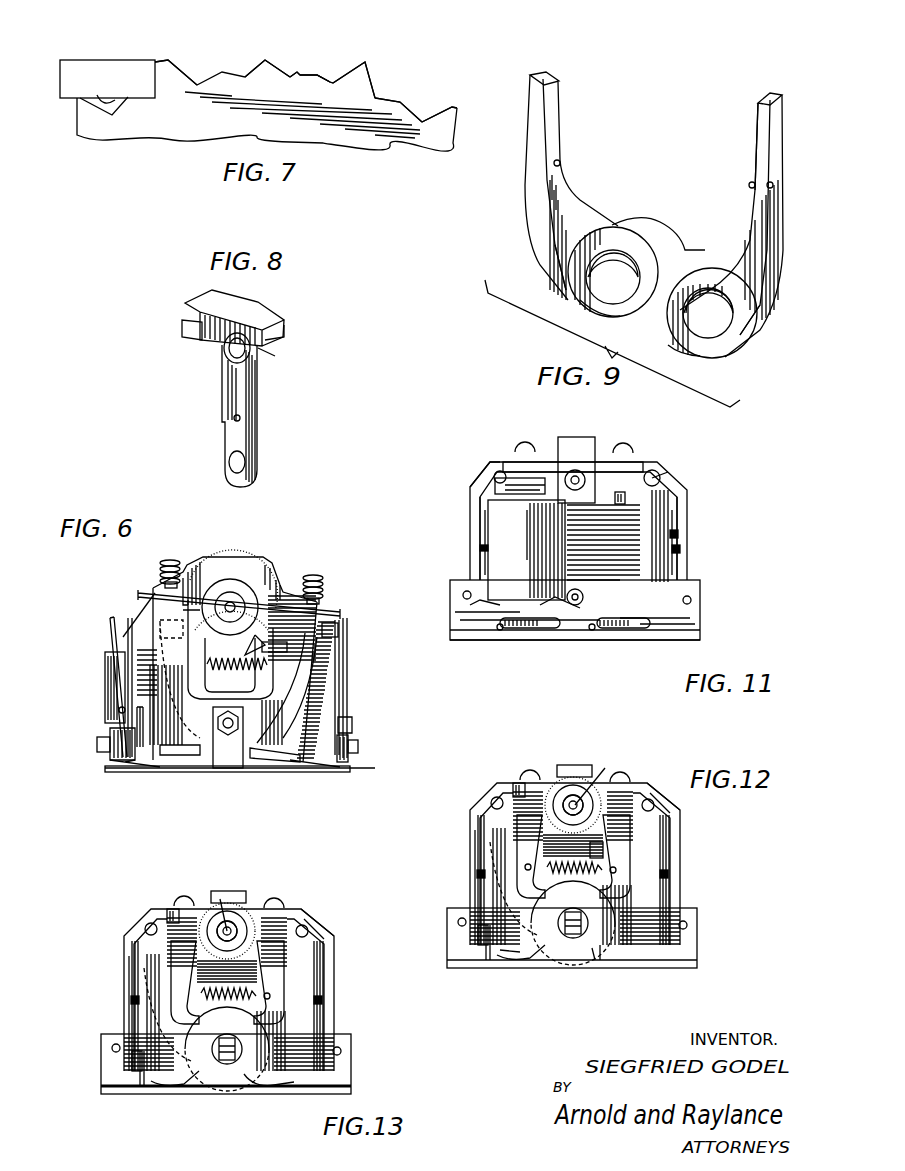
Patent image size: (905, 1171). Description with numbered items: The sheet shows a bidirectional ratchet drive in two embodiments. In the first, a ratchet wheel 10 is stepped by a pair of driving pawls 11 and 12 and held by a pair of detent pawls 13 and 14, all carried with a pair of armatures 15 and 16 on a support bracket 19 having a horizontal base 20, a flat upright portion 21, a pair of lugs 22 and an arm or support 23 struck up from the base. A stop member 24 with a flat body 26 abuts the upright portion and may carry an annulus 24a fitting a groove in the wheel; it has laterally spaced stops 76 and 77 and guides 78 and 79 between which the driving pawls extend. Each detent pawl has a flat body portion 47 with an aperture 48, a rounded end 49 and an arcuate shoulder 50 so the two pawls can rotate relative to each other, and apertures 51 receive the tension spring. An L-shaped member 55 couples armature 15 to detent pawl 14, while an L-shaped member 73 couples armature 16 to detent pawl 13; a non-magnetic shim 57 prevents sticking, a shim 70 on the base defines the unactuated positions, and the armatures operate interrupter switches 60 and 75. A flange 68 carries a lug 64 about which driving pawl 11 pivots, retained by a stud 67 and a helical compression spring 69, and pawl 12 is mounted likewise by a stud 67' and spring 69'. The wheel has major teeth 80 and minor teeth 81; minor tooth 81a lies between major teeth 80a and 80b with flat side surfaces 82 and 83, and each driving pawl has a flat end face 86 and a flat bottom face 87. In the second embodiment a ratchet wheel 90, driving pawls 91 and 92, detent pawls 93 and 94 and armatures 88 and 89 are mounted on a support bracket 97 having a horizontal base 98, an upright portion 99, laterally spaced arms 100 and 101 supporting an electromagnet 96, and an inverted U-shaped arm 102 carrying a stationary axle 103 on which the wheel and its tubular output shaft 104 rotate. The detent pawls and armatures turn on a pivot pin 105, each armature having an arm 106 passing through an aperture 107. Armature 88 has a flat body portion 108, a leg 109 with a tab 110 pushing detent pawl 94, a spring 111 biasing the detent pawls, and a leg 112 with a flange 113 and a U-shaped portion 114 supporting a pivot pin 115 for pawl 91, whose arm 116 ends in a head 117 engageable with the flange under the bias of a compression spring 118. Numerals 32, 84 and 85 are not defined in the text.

In FIG. 7, the ratchet wheel 10 is at (188, 146).
In FIG. 6, the ratchet wheel 10 is at (245, 572).
In FIG. 7, the driving pawl 11 is at (108, 60).
In FIG. 6, the driving pawl 11 is at (205, 570).
In FIG. 6, the driving pawl 12 is at (280, 590).
In FIG. 9, the detent pawl 13 is at (565, 128).
In FIG. 6, the detent pawl 13 is at (205, 678).
In FIG. 9, the detent pawl 14 is at (752, 122).
In FIG. 6, the detent pawl 14 is at (305, 672).
In FIG. 6, the armature 15 is at (165, 755).
In FIG. 6, the armature 16 is at (290, 760).
In FIG. 6, the support bracket 19 is at (350, 718).
In FIG. 6, the horizontal base 20 is at (245, 768).
In FIG. 6, the flat upright portion 21 is at (341, 686).
In FIG. 6, the lugs 22 is at (128, 760).
In FIG. 6, the arm or support 23 is at (226, 770).
In FIG. 8, the stop member 24 is at (208, 396).
In FIG. 6, the stop member 24 is at (270, 553).
In FIG. 8, the annulus 24a is at (225, 346).
In FIG. 8, the flat body 26 is at (247, 395).
In FIG. 6, the shaft 32 is at (230, 600).
In FIG. 9, the flat body portion 47 is at (795, 172).
In FIG. 9, the aperture 48 is at (636, 278).
In FIG. 9, the rounded end 49 is at (660, 346).
In FIG. 9, the arcuate shoulder 50 is at (625, 230).
In FIG. 9, the apertures 51 is at (560, 163).
In FIG. 6, the L-shaped member 55 is at (290, 648).
In FIG. 6, the non-magnetic shim 57 is at (242, 672).
In FIG. 6, the interrupter switch 60 is at (356, 646).
In FIG. 6, the lug 64 is at (142, 590).
In FIG. 6, the stud 67 is at (170, 553).
In FIG. 6, the stud 67' is at (320, 575).
In FIG. 6, the flange 68 is at (140, 598).
In FIG. 6, the helical compression spring 69 is at (155, 564).
In FIG. 6, the spring 69' is at (332, 590).
In FIG. 6, the shim 70 is at (193, 760).
In FIG. 6, the L-shaped member 73 is at (112, 642).
In FIG. 6, the interrupter switch 75 is at (112, 656).
In FIG. 8, the stop 76 is at (182, 312).
In FIG. 8, the stop 77 is at (272, 342).
In FIG. 8, the guide 78 is at (182, 328).
In FIG. 8, the guide 79 is at (270, 350).
In FIG. 7, the major teeth 80 is at (452, 106).
In FIG. 7, the major tooth 80a is at (264, 60).
In FIG. 7, the major tooth 80b is at (366, 62).
In FIG. 7, the minor teeth 81 is at (400, 102).
In FIG. 7, the minor tooth 81a is at (316, 74).
In FIG. 7, the flat side surface 82 is at (327, 91).
In FIG. 7, the flat side surface 83 is at (290, 89).
In FIG. 9, the arm tip 84 is at (551, 75).
In FIG. 9, the arm face 85 is at (757, 138).
In FIG. 7, the flat end face 86 is at (170, 60).
In FIG. 7, the flat bottom face 87 is at (107, 87).
In FIG. 11, the armature 88 is at (678, 526).
In FIG. 12, the armature 88 is at (485, 947).
In FIG. 13, the armature 88 is at (198, 1006).
In FIG. 11, the armature 89 is at (485, 516).
In FIG. 12, the armature 89 is at (648, 962).
In FIG. 13, the armature 89 is at (313, 1022).
In FIG. 12, the ratchet wheel 90 is at (577, 790).
In FIG. 13, the ratchet wheel 90 is at (243, 915).
In FIG. 11, the driving pawl 91 is at (695, 501).
In FIG. 12, the driving pawl 91 is at (522, 783).
In FIG. 13, the driving pawl 91 is at (229, 967).
In FIG. 11, the driving pawl 92 is at (478, 482).
In FIG. 12, the driving pawl 92 is at (640, 790).
In FIG. 13, the driving pawl 92 is at (306, 907).
In FIG. 12, the detent pawl 93 is at (525, 842).
In FIG. 13, the detent pawl 93 is at (190, 971).
In FIG. 12, the detent pawl 94 is at (615, 840).
In FIG. 13, the detent pawl 94 is at (284, 960).
In FIG. 11, the electromagnet 96 is at (526, 550).
In FIG. 11, the support bracket 97 is at (708, 616).
In FIG. 12, the support bracket 97 is at (706, 939).
In FIG. 13, the support bracket 97 is at (246, 1061).
In FIG. 11, the horizontal base 98 is at (700, 639).
In FIG. 11, the upright portion 99 is at (692, 592).
In FIG. 12, the upright portion 99 is at (690, 955).
In FIG. 13, the upright portion 99 is at (250, 1062).
In FIG. 11, the arm 100 is at (648, 472).
In FIG. 11, the arm 101 is at (525, 480).
In FIG. 11, the inverted U-shaped arm 102 is at (590, 452).
In FIG. 12, the inverted U-shaped arm 102 is at (562, 765).
In FIG. 11, the stationary shaft or axle 103 is at (572, 472).
In FIG. 12, the stationary shaft or axle 103 is at (585, 797).
In FIG. 13, the stationary shaft or axle 103 is at (239, 895).
In FIG. 12, the tubular output shaft 104 is at (600, 770).
In FIG. 13, the tubular output shaft 104 is at (211, 888).
In FIG. 11, the pivot pin 105 is at (575, 606).
In FIG. 12, the pivot pin 105 is at (572, 935).
In FIG. 13, the pivot pin 105 is at (227, 1064).
In FIG. 11, the arm 106 is at (532, 630).
In FIG. 11, the aperture 107 is at (499, 632).
In FIG. 12, the aperture 107 is at (592, 958).
In FIG. 13, the aperture 107 is at (222, 1099).
In FIG. 12, the flat body portion 108 is at (520, 955).
In FIG. 12, the leg 109 is at (605, 872).
In FIG. 13, the leg 109 is at (287, 1001).
In FIG. 12, the tab 110 is at (605, 853).
In FIG. 13, the spring 111 is at (179, 1014).
In FIG. 12, the leg 112 is at (495, 828).
In FIG. 13, the leg 112 is at (118, 1012).
In FIG. 11, the flange 113 is at (672, 560).
In FIG. 13, the flange 113 is at (113, 1013).
In FIG. 11, the U-shaped portion 114 is at (656, 480).
In FIG. 12, the U-shaped portion 114 is at (497, 790).
In FIG. 13, the U-shaped portion 114 is at (157, 898).
In FIG. 11, the pivot pin 115 is at (660, 480).
In FIG. 12, the pivot pin 115 is at (492, 800).
In FIG. 13, the pivot pin 115 is at (200, 916).
In FIG. 11, the arm 116 is at (680, 540).
In FIG. 12, the arm 116 is at (472, 857).
In FIG. 13, the arm 116 is at (109, 1051).
In FIG. 12, the head 117 is at (475, 930).
In FIG. 13, the head 117 is at (103, 1055).
In FIG. 11, the compression spring 118 is at (682, 556).
In FIG. 12, the compression spring 118 is at (480, 882).